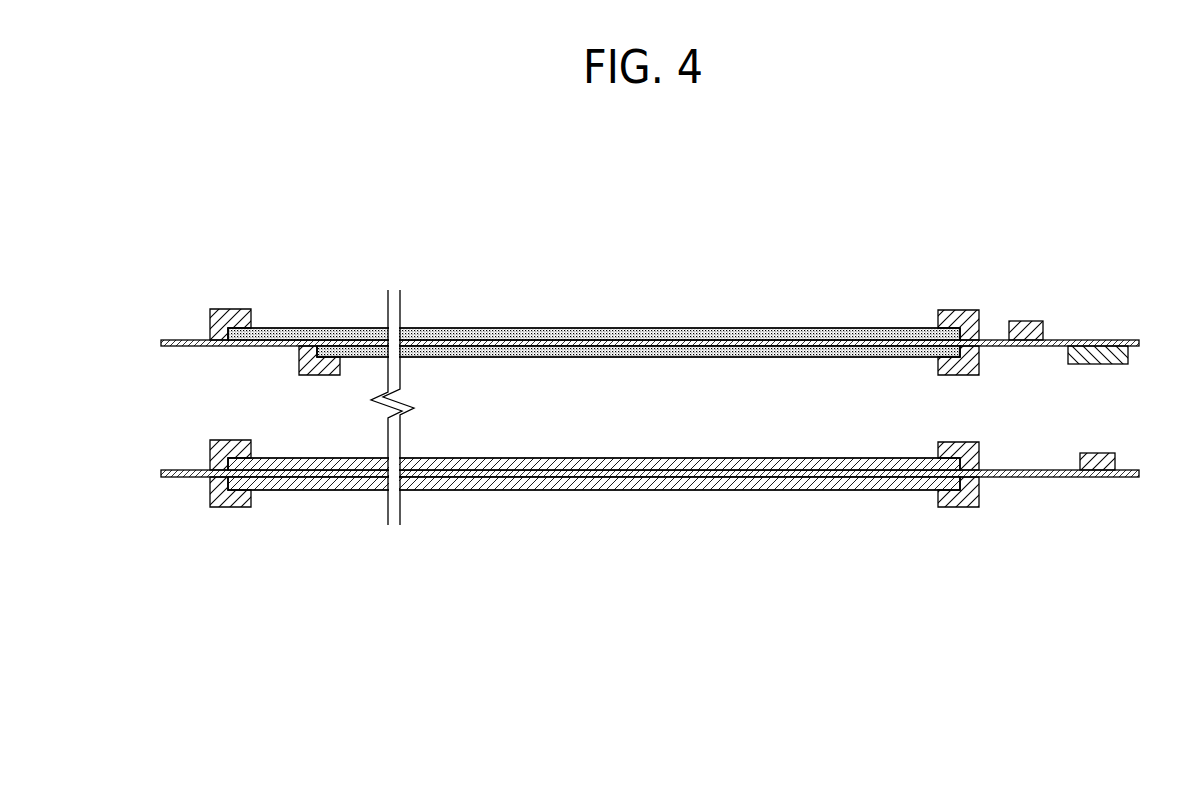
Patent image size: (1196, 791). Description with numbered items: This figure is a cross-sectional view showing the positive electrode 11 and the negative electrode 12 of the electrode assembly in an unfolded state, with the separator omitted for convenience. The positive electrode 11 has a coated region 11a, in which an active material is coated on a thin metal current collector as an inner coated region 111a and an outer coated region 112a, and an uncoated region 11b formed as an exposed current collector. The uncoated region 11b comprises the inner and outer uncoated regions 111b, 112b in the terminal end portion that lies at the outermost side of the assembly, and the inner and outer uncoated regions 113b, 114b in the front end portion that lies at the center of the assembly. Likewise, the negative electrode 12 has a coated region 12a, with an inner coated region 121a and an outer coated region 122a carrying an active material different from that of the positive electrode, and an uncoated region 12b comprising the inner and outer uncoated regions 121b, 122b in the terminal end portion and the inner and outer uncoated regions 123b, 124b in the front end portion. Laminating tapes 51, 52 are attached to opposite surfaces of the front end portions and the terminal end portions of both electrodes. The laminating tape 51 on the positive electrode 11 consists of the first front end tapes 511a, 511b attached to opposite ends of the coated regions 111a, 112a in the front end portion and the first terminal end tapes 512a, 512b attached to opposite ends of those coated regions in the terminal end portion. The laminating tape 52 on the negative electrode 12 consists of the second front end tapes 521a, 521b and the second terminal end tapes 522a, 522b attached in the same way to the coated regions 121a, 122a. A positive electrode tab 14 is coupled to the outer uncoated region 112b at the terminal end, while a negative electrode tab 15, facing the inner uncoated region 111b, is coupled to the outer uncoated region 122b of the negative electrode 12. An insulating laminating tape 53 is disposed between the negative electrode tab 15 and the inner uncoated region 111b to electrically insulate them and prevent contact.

The positive electrode 11 is at (145, 343).
The negative electrode 12 is at (145, 474).
The coated region 11a is at (562, 264).
The coated region 12a is at (562, 549).
The uncoated region 11b is at (625, 715).
The uncoated region 12b is at (753, 715).
The inner coated region 111a is at (542, 352).
The outer coated region 112a is at (485, 331).
The inner coated region 121a is at (483, 482).
The outer coated region 122a is at (542, 467).
The inner uncoated region 111b is at (1023, 347).
The outer uncoated region 112b is at (1062, 338).
The inner uncoated region 113b is at (180, 347).
The outer uncoated region 114b is at (193, 340).
The inner uncoated region 121b is at (1010, 478).
The outer uncoated region 122b is at (1043, 468).
The inner uncoated region 123b is at (180, 478).
The outer uncoated region 124b is at (193, 470).
The positive electrode tab 14 is at (1025, 330).
The negative electrode tab 15 is at (1087, 455).
The insulating laminating tape 53 is at (1107, 357).
The laminating tape 51 is at (938, 715).
The laminating tape 52 is at (1063, 715).
The first front end tape 511a is at (327, 364).
The first front end tape 511b is at (230, 318).
The first terminal end tape 512a is at (958, 368).
The first terminal end tape 512b is at (952, 318).
The second front end tape 521a is at (227, 507).
The second front end tape 521b is at (230, 450).
The second terminal end tape 522a is at (950, 507).
The second terminal end tape 522b is at (952, 447).